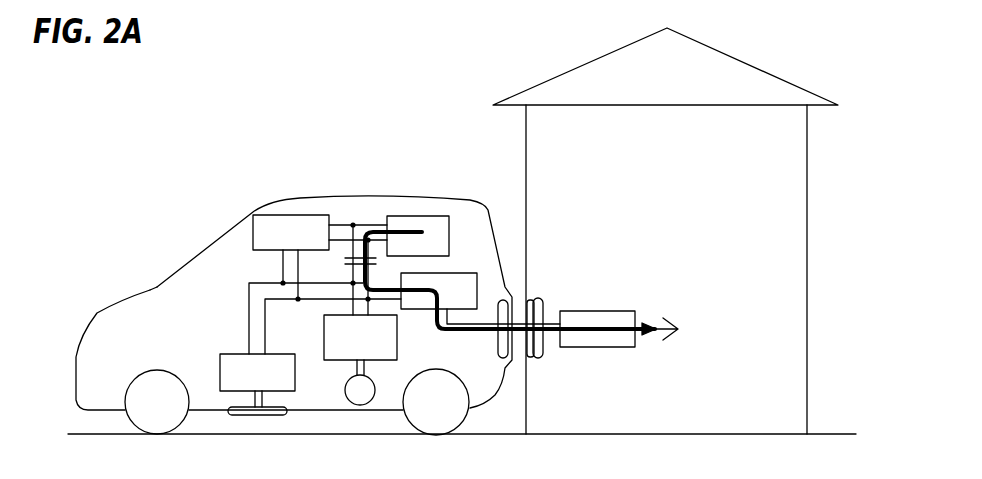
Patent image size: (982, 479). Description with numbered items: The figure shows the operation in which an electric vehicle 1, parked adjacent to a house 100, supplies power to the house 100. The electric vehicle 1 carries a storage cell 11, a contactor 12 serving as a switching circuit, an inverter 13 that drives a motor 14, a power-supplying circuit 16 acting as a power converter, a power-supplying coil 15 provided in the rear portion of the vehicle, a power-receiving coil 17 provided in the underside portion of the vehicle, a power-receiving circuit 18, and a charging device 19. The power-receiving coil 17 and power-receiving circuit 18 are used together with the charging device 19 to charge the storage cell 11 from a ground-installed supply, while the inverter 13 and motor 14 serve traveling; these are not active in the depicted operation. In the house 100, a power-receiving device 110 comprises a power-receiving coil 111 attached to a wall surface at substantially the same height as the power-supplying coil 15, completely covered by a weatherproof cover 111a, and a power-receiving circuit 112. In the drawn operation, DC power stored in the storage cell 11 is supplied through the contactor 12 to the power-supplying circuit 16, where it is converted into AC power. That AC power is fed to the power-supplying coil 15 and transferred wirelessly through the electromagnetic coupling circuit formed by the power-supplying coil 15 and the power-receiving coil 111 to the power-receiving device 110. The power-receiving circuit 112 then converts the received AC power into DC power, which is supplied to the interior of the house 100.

The electric vehicle 1 is at (378, 195).
The storage cell 11 is at (422, 215).
The contactor 12 is at (334, 262).
The inverter 13 is at (324, 339).
The motor 14 is at (345, 387).
The power-supplying coil 15 is at (498, 351).
The power-supplying circuit 16 is at (460, 273).
The power-receiving coil 17 is at (230, 411).
The power-receiving circuit 18 is at (232, 353).
The charging device 19 is at (283, 213).
The house 100 is at (737, 58).
The power-receiving device 110 is at (557, 302).
The power-receiving coil 111 is at (543, 357).
The weatherproof cover 111a is at (530, 360).
The power-receiving circuit 112 is at (605, 310).